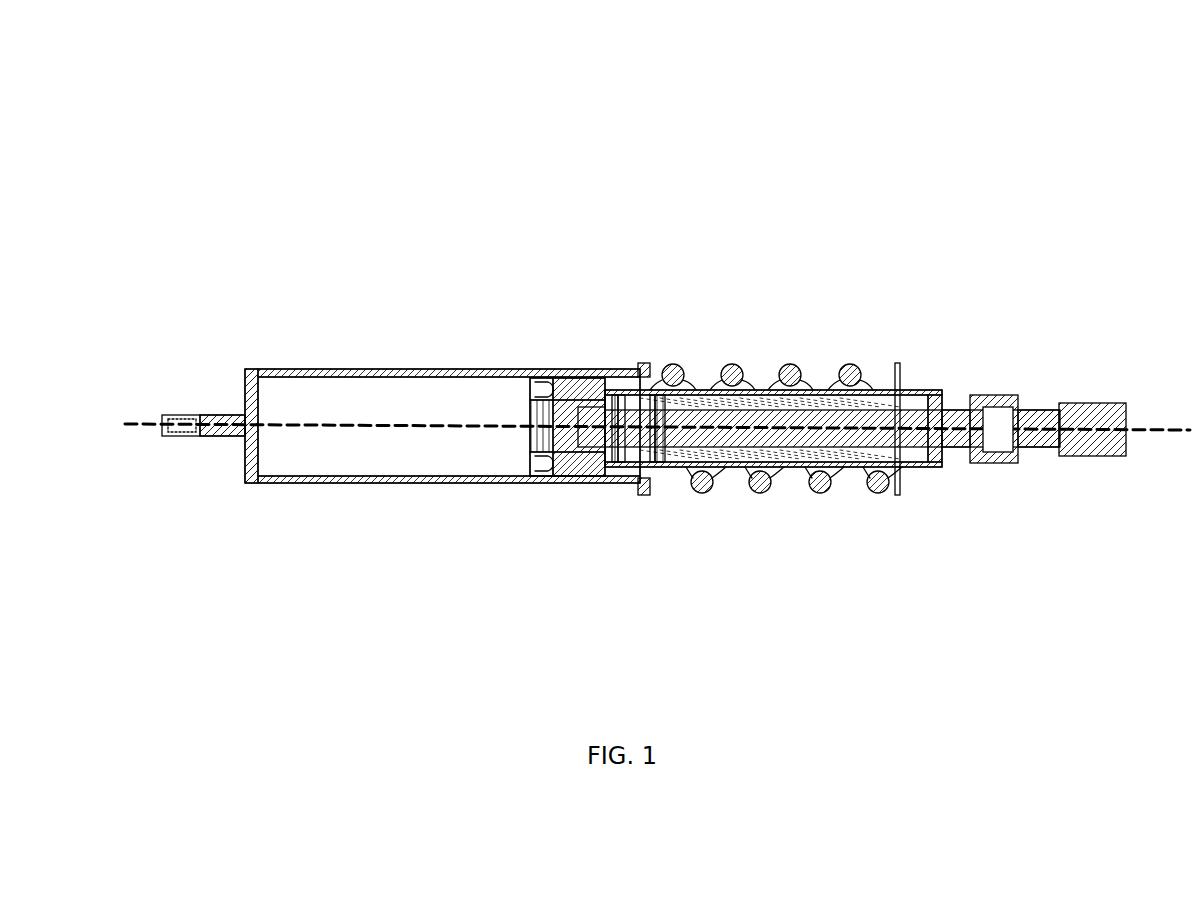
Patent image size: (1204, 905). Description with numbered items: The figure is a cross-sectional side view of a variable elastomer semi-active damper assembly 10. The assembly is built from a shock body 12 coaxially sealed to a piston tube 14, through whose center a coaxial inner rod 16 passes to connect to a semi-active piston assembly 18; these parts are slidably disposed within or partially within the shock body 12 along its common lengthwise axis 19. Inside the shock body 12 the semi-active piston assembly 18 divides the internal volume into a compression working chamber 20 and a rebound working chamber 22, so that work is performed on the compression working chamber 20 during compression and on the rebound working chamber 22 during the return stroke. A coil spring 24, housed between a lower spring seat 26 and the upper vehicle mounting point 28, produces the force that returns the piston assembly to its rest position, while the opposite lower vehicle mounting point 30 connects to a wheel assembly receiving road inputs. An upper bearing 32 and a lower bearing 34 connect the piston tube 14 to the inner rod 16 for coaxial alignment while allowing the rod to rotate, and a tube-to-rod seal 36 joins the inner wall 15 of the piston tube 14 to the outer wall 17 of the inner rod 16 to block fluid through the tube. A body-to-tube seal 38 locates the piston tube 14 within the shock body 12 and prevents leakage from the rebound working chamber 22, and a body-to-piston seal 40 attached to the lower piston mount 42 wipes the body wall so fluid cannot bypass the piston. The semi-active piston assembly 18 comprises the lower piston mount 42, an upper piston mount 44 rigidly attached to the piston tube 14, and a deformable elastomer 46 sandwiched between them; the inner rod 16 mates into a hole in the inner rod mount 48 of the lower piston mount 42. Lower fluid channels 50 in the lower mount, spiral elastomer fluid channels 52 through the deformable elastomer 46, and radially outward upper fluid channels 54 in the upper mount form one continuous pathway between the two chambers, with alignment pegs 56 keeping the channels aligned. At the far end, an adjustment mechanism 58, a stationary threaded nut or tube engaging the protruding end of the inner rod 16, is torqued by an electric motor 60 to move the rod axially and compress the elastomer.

The semi-active damper assembly 10 is at (328, 135).
The shock body 12 is at (327, 470).
The piston tube 14 is at (723, 462).
The inner wall of the piston tube 15 is at (672, 405).
The inner rod 16 is at (943, 445).
The outer wall of the inner rod 17 is at (705, 408).
The semi-active piston assembly 18 is at (595, 186).
The lengthwise axis 19 is at (1157, 432).
The compression working chamber 20 is at (342, 392).
The rebound working chamber 22 is at (628, 488).
The coil spring 24 is at (824, 490).
The lower spring seat 26 is at (642, 492).
The upper vehicle mounting point 28 is at (898, 348).
The lower vehicle mounting point 30 is at (191, 372).
The upper bearing 32 is at (938, 452).
The lower bearing 34 is at (650, 390).
The tube-to-rod seal 36 is at (700, 390).
The body-to-tube seal 38 is at (665, 466).
The body-to-piston seal 40 is at (518, 432).
The lower piston mount 42 is at (547, 465).
The upper piston mount 44 is at (603, 480).
The deformable elastomer 46 is at (590, 380).
The inner rod mount 48 is at (560, 380).
The lower fluid channels 50 is at (533, 392).
The elastomer fluid channels 52 is at (588, 470).
The upper fluid channels 54 is at (612, 390).
The alignment pegs 56 is at (607, 380).
The adjustment mechanism 58 is at (985, 395).
The electric motor 60 is at (1095, 403).